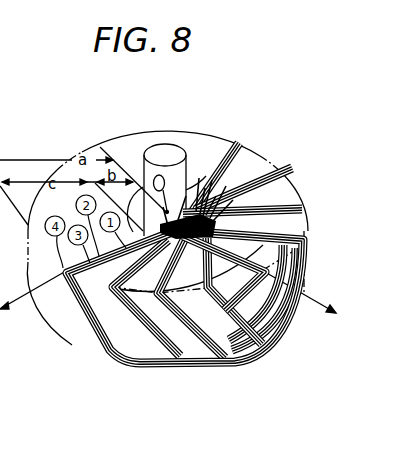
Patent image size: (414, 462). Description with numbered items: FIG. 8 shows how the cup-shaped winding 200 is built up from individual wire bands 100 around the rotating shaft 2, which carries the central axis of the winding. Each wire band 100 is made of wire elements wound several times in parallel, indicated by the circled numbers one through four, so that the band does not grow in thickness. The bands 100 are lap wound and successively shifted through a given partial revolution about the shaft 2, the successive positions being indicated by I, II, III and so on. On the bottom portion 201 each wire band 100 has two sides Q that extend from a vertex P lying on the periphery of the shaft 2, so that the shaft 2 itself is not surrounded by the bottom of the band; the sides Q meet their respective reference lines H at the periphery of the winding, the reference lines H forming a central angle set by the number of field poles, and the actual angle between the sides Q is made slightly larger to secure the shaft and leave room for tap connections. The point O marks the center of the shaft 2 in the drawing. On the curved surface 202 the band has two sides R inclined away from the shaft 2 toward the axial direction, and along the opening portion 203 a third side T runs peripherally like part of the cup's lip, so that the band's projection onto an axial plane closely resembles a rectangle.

The rotating shaft 2 is at (178, 153).
The wire band 100 is at (107, 344).
The cup-shaped winding 200 is at (254, 140).
The bottom portion 201 is at (158, 131).
The curved surface 202 is at (64, 314).
The opening portion 203 is at (137, 371).
The reference lines H is at (308, 305).
The center point O is at (161, 194).
The first winding position I is at (280, 200).
The second winding position II is at (288, 233).
The third winding position III is at (292, 251).
The vertex P is at (178, 247).
The two sides Q is at (113, 268).
The two sides R is at (74, 338).
The third side T is at (173, 371).